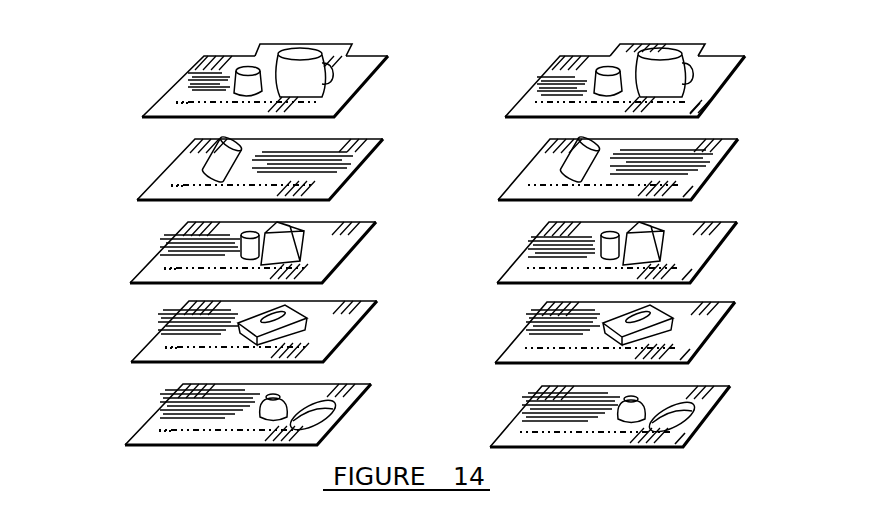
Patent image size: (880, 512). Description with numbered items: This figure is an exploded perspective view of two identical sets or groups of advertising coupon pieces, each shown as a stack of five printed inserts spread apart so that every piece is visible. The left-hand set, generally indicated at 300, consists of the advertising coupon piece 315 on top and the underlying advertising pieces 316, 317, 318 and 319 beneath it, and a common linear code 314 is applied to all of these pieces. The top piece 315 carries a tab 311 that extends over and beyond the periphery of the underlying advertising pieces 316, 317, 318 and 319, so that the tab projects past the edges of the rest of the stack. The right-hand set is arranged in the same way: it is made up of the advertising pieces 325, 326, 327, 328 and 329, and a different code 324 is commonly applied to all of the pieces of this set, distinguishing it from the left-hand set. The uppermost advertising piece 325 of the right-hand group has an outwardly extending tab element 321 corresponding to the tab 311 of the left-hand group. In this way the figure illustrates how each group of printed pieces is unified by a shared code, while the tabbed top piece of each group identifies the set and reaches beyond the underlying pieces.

The set of advertising coupon pieces 300 is at (148, 87).
The tab 311 is at (262, 51).
The common linear code 314 is at (187, 103).
The advertising coupon piece 315 is at (366, 71).
The advertising piece 316 is at (361, 154).
The advertising piece 317 is at (354, 237).
The advertising piece 318 is at (355, 315).
The advertising piece 319 is at (349, 398).
The tab element 321 is at (621, 46).
The code 324 is at (704, 110).
The advertising piece 325 is at (535, 86).
The advertising piece 326 is at (526, 170).
The advertising piece 327 is at (525, 253).
The advertising piece 328 is at (525, 336).
The advertising piece 329 is at (520, 418).